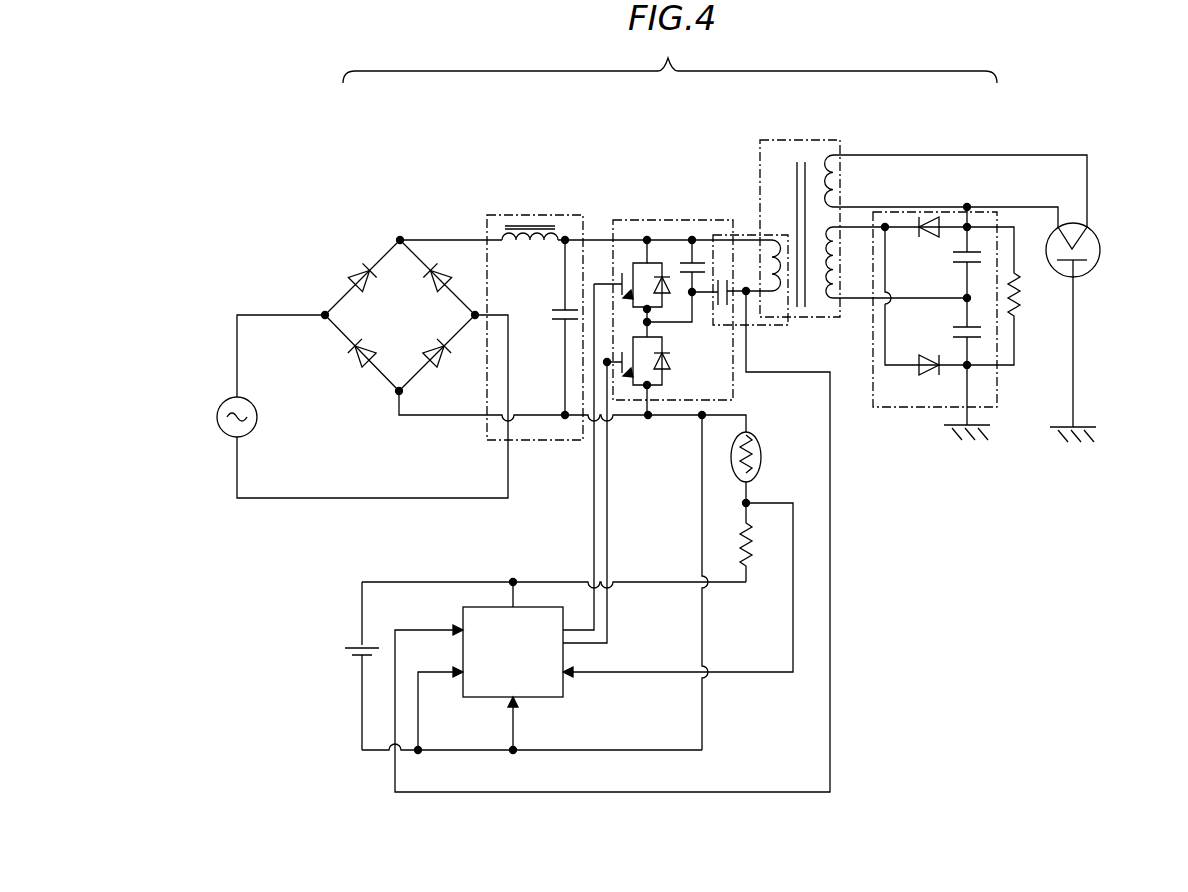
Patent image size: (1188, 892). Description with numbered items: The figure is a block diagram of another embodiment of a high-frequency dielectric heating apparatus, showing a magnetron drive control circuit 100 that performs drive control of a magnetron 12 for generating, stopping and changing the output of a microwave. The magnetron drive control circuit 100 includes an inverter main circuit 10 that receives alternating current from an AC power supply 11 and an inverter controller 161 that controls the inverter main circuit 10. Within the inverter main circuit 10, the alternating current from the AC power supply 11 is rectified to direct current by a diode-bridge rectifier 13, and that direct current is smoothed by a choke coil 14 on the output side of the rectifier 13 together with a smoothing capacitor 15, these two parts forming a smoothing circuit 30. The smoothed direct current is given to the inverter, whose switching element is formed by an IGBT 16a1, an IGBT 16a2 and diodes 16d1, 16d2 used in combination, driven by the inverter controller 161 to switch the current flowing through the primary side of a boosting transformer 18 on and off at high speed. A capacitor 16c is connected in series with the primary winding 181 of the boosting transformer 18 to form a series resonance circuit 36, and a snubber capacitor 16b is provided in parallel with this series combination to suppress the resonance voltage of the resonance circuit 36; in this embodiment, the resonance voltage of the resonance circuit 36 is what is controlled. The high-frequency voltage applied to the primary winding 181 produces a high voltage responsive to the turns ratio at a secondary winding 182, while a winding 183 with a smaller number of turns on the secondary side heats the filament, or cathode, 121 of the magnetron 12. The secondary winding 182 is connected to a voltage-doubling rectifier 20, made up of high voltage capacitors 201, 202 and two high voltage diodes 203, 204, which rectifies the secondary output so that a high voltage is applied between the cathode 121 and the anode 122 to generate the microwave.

The magnetron drive control circuit 100 is at (250, 255).
The inverter main circuit 10 is at (670, 60).
The AC power supply 11 is at (258, 426).
The magnetron 12 is at (1096, 268).
The filament 121 is at (1088, 238).
The anode 122 is at (1090, 260).
The rectifier 13 is at (412, 326).
The choke coil 14 is at (540, 228).
The smoothing capacitor 15 is at (553, 316).
The smoothing circuit 30 is at (503, 215).
The IGBT 16a1 is at (625, 283).
The IGBT 16a2 is at (625, 368).
The snubber capacitor 16b is at (692, 262).
The capacitor 16c is at (730, 303).
The diode 16d1 is at (660, 272).
The diode 16d2 is at (668, 362).
The resonance circuit 36 is at (727, 333).
The inverter controller 161 is at (557, 688).
The boosting transformer 18 is at (780, 140).
The primary winding 181 is at (775, 265).
The secondary winding 182 is at (832, 284).
The winding 183 is at (835, 186).
The voltage-doubling rectifier 20 is at (912, 407).
The high voltage capacitor 201 is at (980, 340).
The high voltage capacitor 202 is at (967, 245).
The high voltage diode 203 is at (928, 238).
The high voltage diode 204 is at (928, 355).